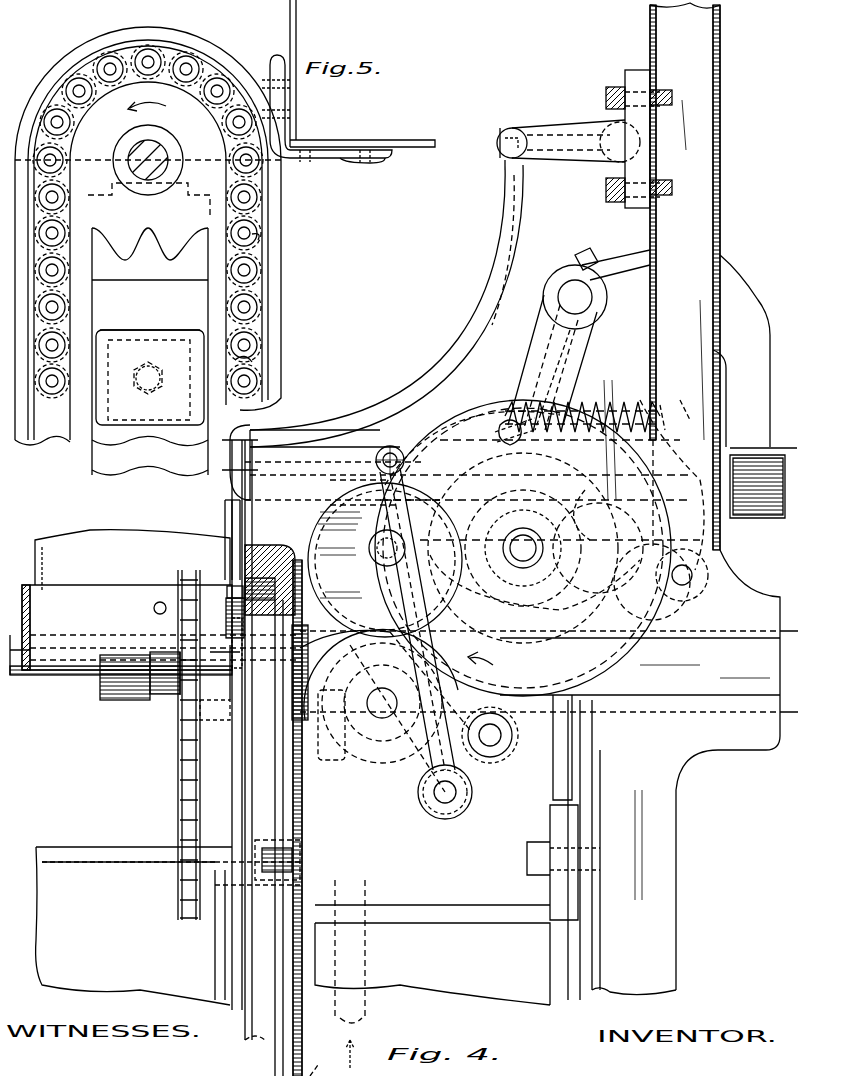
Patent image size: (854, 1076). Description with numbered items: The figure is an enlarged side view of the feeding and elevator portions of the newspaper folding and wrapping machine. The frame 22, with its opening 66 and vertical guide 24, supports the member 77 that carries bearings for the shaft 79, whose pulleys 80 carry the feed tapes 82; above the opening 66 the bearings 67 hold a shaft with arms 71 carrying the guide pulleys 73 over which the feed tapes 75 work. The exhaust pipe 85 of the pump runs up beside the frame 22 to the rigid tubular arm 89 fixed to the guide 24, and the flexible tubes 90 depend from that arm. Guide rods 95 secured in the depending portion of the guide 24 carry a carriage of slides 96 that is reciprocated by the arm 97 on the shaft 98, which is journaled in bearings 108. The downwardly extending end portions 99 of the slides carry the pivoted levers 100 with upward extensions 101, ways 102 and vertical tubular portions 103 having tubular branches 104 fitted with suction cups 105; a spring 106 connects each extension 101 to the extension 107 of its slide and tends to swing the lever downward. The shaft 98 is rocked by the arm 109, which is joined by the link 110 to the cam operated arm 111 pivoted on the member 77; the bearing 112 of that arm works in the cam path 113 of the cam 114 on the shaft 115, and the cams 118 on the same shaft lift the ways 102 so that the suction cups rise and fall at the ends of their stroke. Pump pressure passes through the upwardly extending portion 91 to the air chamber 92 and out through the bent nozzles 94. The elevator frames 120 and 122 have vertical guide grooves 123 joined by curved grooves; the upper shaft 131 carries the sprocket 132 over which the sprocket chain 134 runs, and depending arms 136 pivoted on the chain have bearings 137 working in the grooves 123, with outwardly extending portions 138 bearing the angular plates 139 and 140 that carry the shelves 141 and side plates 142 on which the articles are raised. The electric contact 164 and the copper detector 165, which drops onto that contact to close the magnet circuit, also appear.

In FIG. 4, the frame 22 is at (660, 830).
In FIG. 4, the vertical guide 24 is at (720, 128).
In FIG. 4, the opening 66 is at (752, 630).
In FIG. 4, the bearings 67 is at (640, 408).
In FIG. 4, the arms 71 is at (485, 528).
In FIG. 4, the guide pulleys 73 is at (326, 545).
In FIG. 4, the feed tapes 75 is at (780, 447).
In FIG. 4, the member 77 is at (447, 852).
In FIG. 4, the shaft 79 is at (390, 718).
In FIG. 4, the pulleys 80 is at (415, 780).
In FIG. 4, the feed tapes 82 is at (578, 702).
In FIG. 4, the exhaust pipe 85 is at (618, 160).
In FIG. 4, the rigid tubular arm 89 is at (573, 132).
In FIG. 4, the flexible tubes 90 is at (482, 322).
In FIG. 4, the upwardly extending portion 91 is at (365, 1002).
In FIG. 4, the air chamber 92 is at (375, 790).
In FIG. 4, the nozzles 94 is at (305, 628).
In FIG. 4, the guide rods 95 is at (578, 515).
In FIG. 4, the slides 96 is at (598, 548).
In FIG. 4, the arm 97 is at (528, 370).
In FIG. 4, the shaft 98 is at (575, 297).
In FIG. 4, the downwardly extending end portions 99 is at (655, 548).
In FIG. 4, the levers 100 is at (740, 538).
In FIG. 4, the upward extensions 101 is at (694, 418).
In FIG. 4, the ways 102 is at (380, 522).
In FIG. 4, the tubular portions 103 is at (225, 518).
In FIG. 4, the tubular branches 104 is at (232, 585).
In FIG. 4, the suction cups 105 is at (222, 628).
In FIG. 4, the spring 106 is at (668, 410).
In FIG. 4, the extension 107 is at (512, 412).
In FIG. 4, the bearings 108 is at (636, 262).
In FIG. 4, the arm 109 is at (545, 350).
In FIG. 4, the link 110 is at (402, 440).
In FIG. 4, the cam operated arm 111 is at (450, 690).
In FIG. 4, the bearing 112 is at (370, 548).
In FIG. 4, the cam path 113 is at (452, 428).
In FIG. 4, the cam 114 is at (540, 557).
In FIG. 4, the shaft 115 is at (523, 548).
In FIG. 4, the cams 118 is at (575, 598).
In FIG. 4, the elevator frame 120 is at (268, 1025).
In FIG. 5, the elevator frame 122 is at (276, 218).
In FIG. 4, the guide grooves 123 is at (258, 562).
In FIG. 5, the upper shaft 131 is at (140, 175).
In FIG. 4, the upper shaft 131 is at (130, 700).
In FIG. 5, the sprocket 132 is at (163, 258).
In FIG. 4, the sprocket 132 is at (165, 718).
In FIG. 5, the sprocket chain 134 is at (250, 362).
In FIG. 4, the sprocket chain 134 is at (178, 803).
In FIG. 5, the depending arms 136 is at (268, 243).
In FIG. 5, the bearings 137 is at (258, 292).
In FIG. 5, the outwardly extending portions 138 is at (282, 160).
In FIG. 5, the angularly disposed plate 139 is at (372, 165).
In FIG. 4, the angularly disposed plate 139 is at (18, 668).
In FIG. 5, the angularly disposed plate 140 is at (275, 72).
In FIG. 4, the angularly disposed plate 140 is at (72, 595).
In FIG. 5, the shelves 141 is at (420, 140).
In FIG. 4, the shelves 141 is at (10, 670).
In FIG. 5, the side plates 142 is at (296, 20).
In FIG. 4, the side plates 142 is at (100, 545).
In FIG. 4, the electric contact 164 is at (268, 760).
In FIG. 4, the copper detector 165 is at (305, 604).